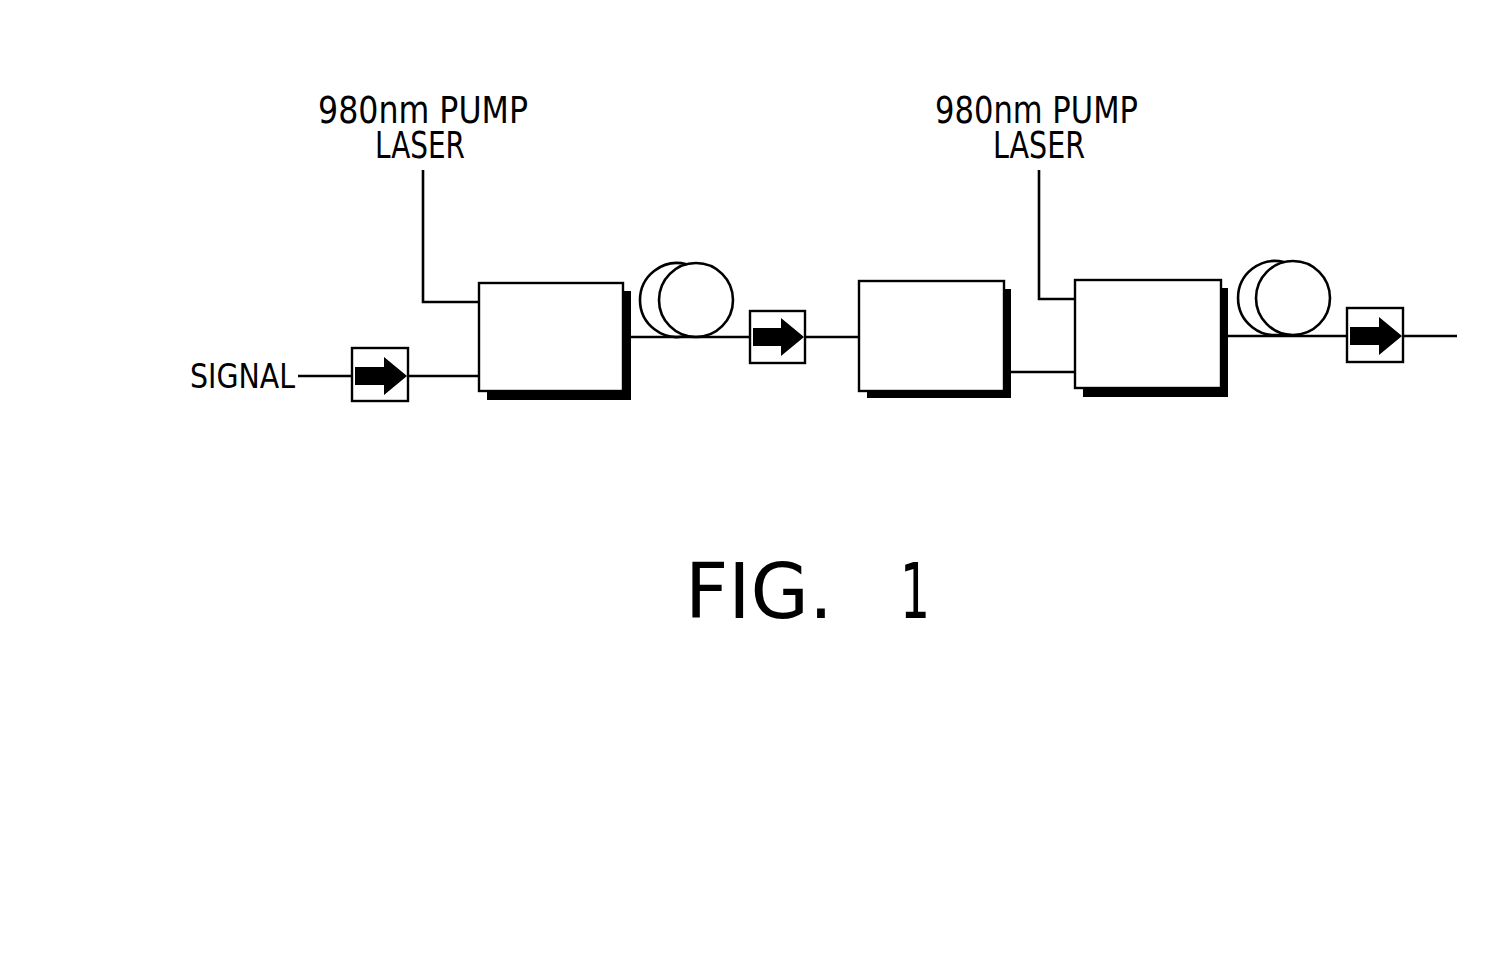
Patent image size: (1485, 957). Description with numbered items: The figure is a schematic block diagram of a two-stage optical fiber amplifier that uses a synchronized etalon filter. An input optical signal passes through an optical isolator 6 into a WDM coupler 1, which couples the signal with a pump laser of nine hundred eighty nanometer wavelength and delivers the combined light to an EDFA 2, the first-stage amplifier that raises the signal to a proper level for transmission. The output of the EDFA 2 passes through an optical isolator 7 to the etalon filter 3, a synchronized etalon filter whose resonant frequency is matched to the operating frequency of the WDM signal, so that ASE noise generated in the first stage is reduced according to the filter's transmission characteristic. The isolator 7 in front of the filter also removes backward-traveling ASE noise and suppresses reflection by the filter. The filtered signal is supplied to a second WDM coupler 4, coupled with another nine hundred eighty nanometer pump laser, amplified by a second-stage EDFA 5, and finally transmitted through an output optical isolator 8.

The WDM coupler 1 is at (550, 283).
The EDFA 2 is at (713, 265).
The etalon filter 3 is at (930, 281).
The WDM coupler 4 is at (1146, 280).
The EDFA 5 is at (1311, 262).
The optical isolator 6 is at (381, 401).
The optical isolator 7 is at (780, 363).
The optical isolator 8 is at (1376, 362).